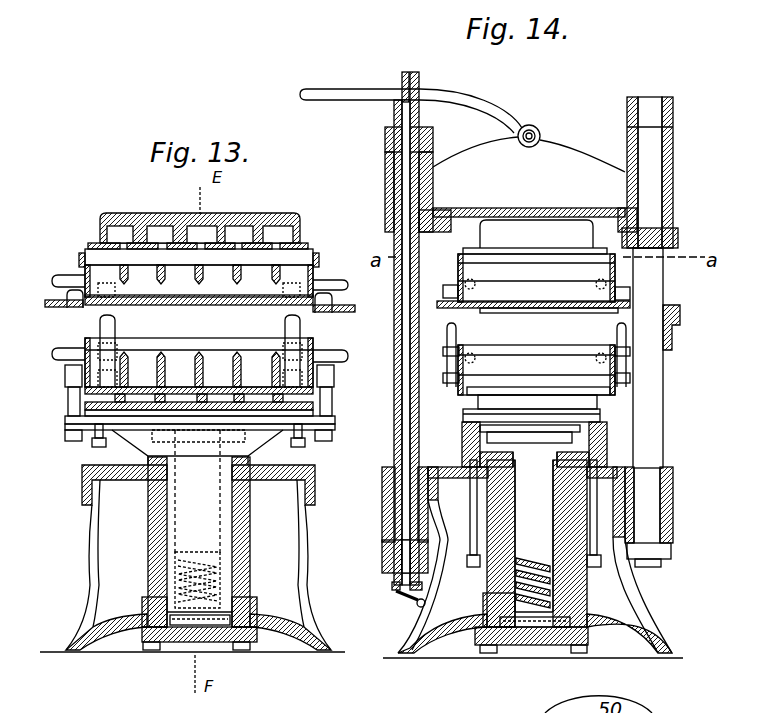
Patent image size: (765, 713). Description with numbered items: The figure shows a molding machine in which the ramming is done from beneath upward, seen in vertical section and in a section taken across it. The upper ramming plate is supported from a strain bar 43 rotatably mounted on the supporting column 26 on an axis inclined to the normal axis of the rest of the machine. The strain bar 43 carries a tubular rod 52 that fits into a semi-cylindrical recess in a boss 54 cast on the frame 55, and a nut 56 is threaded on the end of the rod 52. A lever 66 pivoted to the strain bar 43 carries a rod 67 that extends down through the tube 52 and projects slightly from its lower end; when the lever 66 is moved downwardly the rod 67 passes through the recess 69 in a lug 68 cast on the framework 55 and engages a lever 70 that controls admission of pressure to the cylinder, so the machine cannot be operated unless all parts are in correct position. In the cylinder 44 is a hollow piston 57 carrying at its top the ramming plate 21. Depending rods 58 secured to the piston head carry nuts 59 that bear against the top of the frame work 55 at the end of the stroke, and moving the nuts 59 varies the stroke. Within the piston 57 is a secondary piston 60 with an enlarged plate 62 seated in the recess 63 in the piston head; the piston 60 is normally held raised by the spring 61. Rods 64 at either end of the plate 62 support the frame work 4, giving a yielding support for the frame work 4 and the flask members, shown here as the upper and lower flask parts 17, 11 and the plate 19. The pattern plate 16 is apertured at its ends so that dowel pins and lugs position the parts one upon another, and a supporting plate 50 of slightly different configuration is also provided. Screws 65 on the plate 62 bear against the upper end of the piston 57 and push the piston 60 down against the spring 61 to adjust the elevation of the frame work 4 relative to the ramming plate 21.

In FIG. 13, the frame work 4 is at (333, 389).
In FIG. 14, the frame work 4 is at (488, 375).
In FIG. 13, the lower mold body 11 is at (313, 346).
In FIG. 14, the lower mold body 11 is at (465, 349).
In FIG. 13, the pattern plate 16 is at (186, 304).
In FIG. 14, the pattern plate 16 is at (537, 304).
In FIG. 13, the upper mold body 17 is at (318, 283).
In FIG. 14, the upper mold body 17 is at (462, 284).
In FIG. 13, the upper mold plate 19 is at (316, 252).
In FIG. 14, the upper mold plate 19 is at (465, 253).
In FIG. 13, the ramming plate 21 is at (222, 385).
In FIG. 14, the ramming plate 21 is at (492, 402).
In FIG. 14, the supporting column 26 is at (652, 409).
In FIG. 14, the strain bar 43 is at (550, 191).
In FIG. 13, the cylinder 44 is at (192, 554).
In FIG. 14, the cylinder 44 is at (489, 606).
In FIG. 13, the supporting plate 50 is at (52, 306).
In FIG. 14, the supporting plate 50 is at (587, 306).
In FIG. 14, the tubular rod 52 is at (414, 418).
In FIG. 14, the boss 54 is at (384, 515).
In FIG. 14, the frame 55 is at (478, 521).
In FIG. 14, the nut 56 is at (382, 549).
In FIG. 13, the hollow piston 57 is at (197, 555).
In FIG. 14, the hollow piston 57 is at (507, 523).
In FIG. 14, the depending rods 58 is at (473, 500).
In FIG. 14, the nuts 59 is at (470, 566).
In FIG. 13, the secondary piston 60 is at (220, 497).
In FIG. 14, the secondary piston 60 is at (535, 484).
In FIG. 13, the spring 61 is at (200, 568).
In FIG. 14, the spring 61 is at (544, 554).
In FIG. 13, the enlarged plate 62 is at (68, 430).
In FIG. 14, the enlarged plate 62 is at (482, 433).
In FIG. 14, the recess 63 is at (564, 461).
In FIG. 13, the rods 64 is at (70, 400).
In FIG. 13, the screws 65 is at (100, 447).
In FIG. 14, the lever 66 is at (456, 99).
In FIG. 14, the rod 67 is at (412, 334).
In FIG. 14, the lug 68 is at (420, 593).
In FIG. 14, the recess 69 is at (392, 587).
In FIG. 14, the lever 70 is at (400, 595).